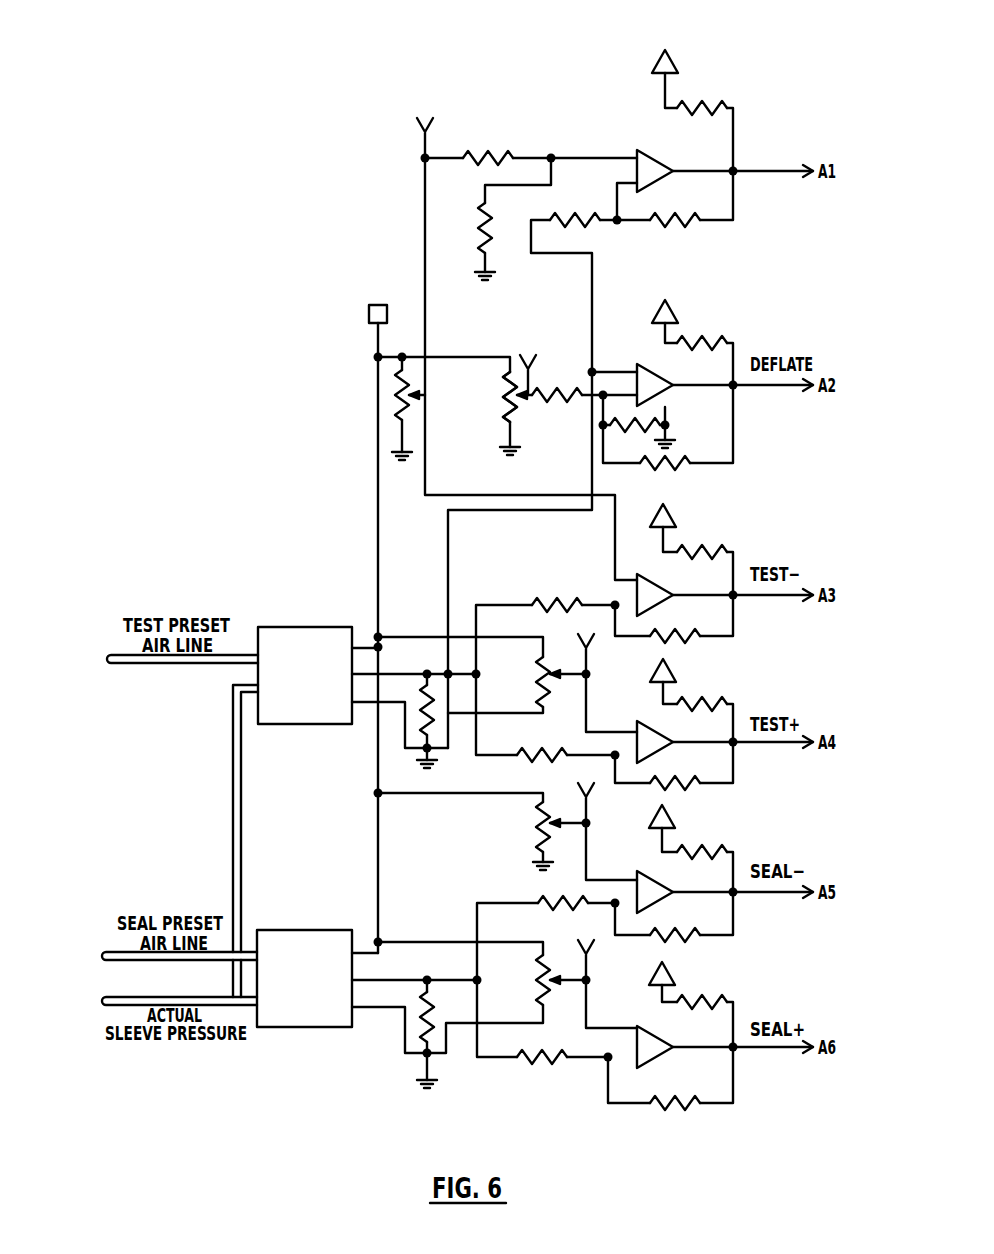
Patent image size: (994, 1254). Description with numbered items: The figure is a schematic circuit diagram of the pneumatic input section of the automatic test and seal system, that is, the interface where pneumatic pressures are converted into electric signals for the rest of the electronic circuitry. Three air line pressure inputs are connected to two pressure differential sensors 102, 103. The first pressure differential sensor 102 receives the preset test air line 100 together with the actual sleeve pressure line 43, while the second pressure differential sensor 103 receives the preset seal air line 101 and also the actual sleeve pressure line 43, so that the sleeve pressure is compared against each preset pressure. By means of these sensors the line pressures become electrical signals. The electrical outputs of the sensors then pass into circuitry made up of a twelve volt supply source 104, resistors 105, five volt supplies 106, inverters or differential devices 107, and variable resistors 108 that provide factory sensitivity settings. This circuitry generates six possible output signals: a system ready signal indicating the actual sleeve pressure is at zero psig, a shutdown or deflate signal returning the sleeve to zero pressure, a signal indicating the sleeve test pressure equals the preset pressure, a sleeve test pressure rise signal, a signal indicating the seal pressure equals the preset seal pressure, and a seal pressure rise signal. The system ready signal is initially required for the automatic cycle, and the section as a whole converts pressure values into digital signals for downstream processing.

The preset test air line 100 is at (140, 665).
The preset seal air line 101 is at (105, 955).
The actual sleeve pressure line 43 is at (125, 998).
The pressure differential sensor 102 is at (300, 726).
The pressure differential sensor 103 is at (298, 946).
The 12 volt supply source 104 is at (369, 314).
The resistors 105 is at (490, 151).
The 5 volt supplies 106 is at (672, 66).
The inverters or differential devices 107 is at (650, 163).
The variable resistors 108 is at (510, 395).